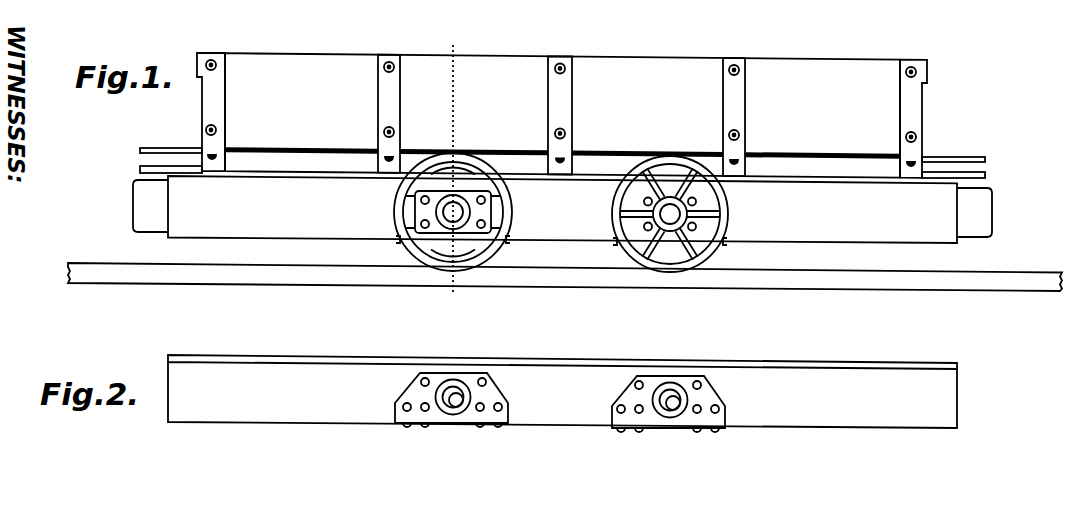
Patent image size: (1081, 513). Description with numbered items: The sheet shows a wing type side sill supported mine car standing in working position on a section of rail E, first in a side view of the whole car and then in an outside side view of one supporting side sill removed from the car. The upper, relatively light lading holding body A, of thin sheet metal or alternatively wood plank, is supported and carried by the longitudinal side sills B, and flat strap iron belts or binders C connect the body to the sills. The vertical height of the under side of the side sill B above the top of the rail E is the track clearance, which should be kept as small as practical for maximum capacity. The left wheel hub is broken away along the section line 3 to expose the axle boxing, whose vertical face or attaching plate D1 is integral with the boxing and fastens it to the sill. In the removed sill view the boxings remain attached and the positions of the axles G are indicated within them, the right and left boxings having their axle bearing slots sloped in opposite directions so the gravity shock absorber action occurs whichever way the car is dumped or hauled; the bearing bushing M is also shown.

In FIG. 1, the section line 3- 3 is at (453, 170).
In FIG. 1, the lading holding body A is at (562, 115).
In FIG. 1, the side sill B is at (562, 209).
In FIG. 2, the side sill B is at (562, 391).
In FIG. 1, the strap iron belt C is at (728, 100).
In FIG. 1, the rail E is at (910, 286).
In FIG. 2, the boxing face plate D1 is at (413, 410).
In FIG. 2, the axle G is at (448, 403).
In FIG. 2, the bearing bushing M is at (462, 407).